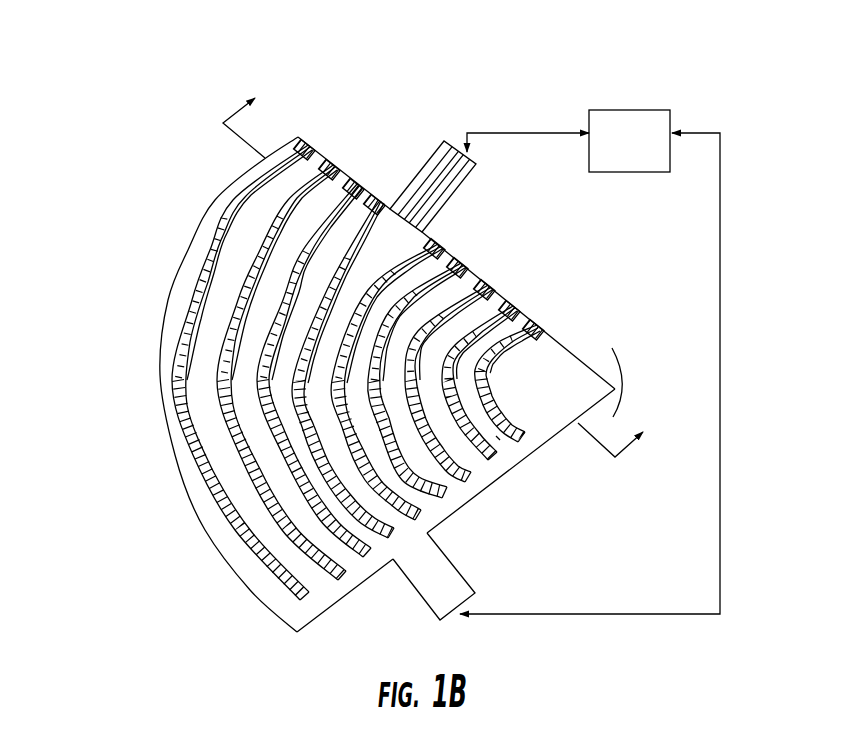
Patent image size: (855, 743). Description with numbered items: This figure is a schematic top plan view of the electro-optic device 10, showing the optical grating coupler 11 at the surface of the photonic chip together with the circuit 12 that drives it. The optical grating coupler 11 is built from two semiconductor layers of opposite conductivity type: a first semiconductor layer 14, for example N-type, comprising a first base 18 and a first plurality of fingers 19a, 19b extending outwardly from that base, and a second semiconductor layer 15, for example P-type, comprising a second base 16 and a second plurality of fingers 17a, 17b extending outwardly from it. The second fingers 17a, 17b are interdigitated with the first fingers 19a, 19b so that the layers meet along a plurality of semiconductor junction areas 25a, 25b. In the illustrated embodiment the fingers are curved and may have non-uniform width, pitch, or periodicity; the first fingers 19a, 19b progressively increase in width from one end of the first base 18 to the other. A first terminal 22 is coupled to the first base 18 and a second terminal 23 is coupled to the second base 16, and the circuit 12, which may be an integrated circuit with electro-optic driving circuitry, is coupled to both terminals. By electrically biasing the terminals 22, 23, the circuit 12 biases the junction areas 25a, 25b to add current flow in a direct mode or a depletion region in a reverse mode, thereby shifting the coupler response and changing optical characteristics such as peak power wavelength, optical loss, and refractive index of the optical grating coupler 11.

The electro-optic device 10 is at (157, 150).
The optical grating coupler 11 is at (133, 280).
The circuit 12 is at (640, 110).
The first semiconductor layer 14 is at (418, 174).
The second semiconductor layer 15 is at (533, 457).
The second base 16 is at (440, 512).
The second finger 17a is at (225, 543).
The second finger 17b is at (220, 460).
The first base 18 is at (462, 272).
The first finger 19a is at (498, 357).
The first finger 19b is at (500, 283).
The first terminal 22 is at (455, 177).
The second terminal 23 is at (452, 563).
The semiconductor junction area 25a is at (498, 357).
The semiconductor junction area 25b is at (500, 440).